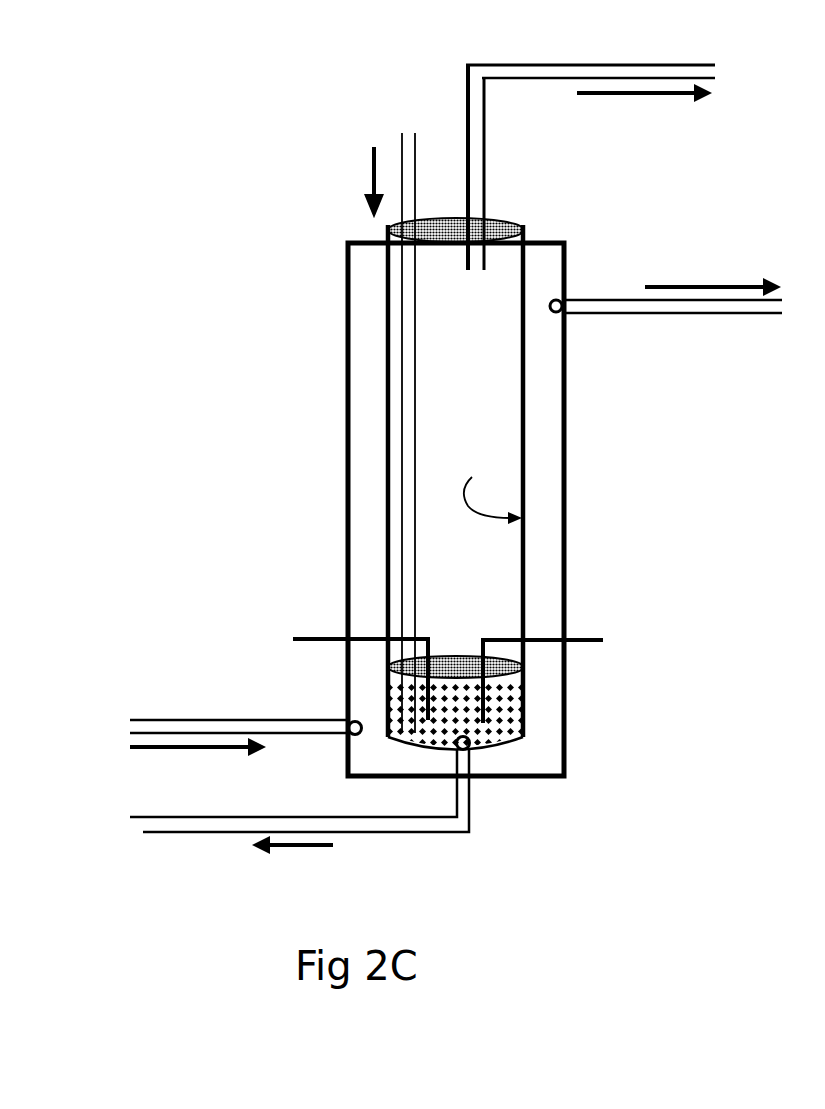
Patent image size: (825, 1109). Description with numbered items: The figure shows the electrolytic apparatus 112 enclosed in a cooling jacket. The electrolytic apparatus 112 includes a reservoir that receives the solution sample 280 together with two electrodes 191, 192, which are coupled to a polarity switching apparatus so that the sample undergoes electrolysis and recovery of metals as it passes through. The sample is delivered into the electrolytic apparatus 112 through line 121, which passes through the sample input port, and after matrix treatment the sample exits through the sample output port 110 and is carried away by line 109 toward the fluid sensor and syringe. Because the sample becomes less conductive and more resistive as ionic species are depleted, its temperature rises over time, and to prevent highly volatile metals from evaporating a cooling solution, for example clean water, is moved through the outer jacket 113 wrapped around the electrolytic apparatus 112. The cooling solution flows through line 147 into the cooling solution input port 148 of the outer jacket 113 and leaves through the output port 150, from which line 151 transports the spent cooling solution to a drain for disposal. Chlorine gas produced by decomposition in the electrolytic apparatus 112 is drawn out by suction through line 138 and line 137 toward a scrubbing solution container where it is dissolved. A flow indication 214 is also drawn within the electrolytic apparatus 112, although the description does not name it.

The line 109 is at (415, 835).
The sample output port 110 is at (473, 737).
The electrolytic apparatus 112 is at (523, 395).
The outer jacket 113 is at (348, 422).
The line 121 is at (402, 284).
The line 137 is at (537, 80).
The line 138 is at (484, 188).
The line 147 is at (225, 718).
The cooling solution input port 148 is at (347, 738).
The output port 150 is at (570, 296).
The line 151 is at (687, 315).
The electrode 191 is at (322, 637).
The electrode 192 is at (593, 637).
The flow direction arrow 214 is at (472, 477).
The solution sample 280 is at (510, 696).